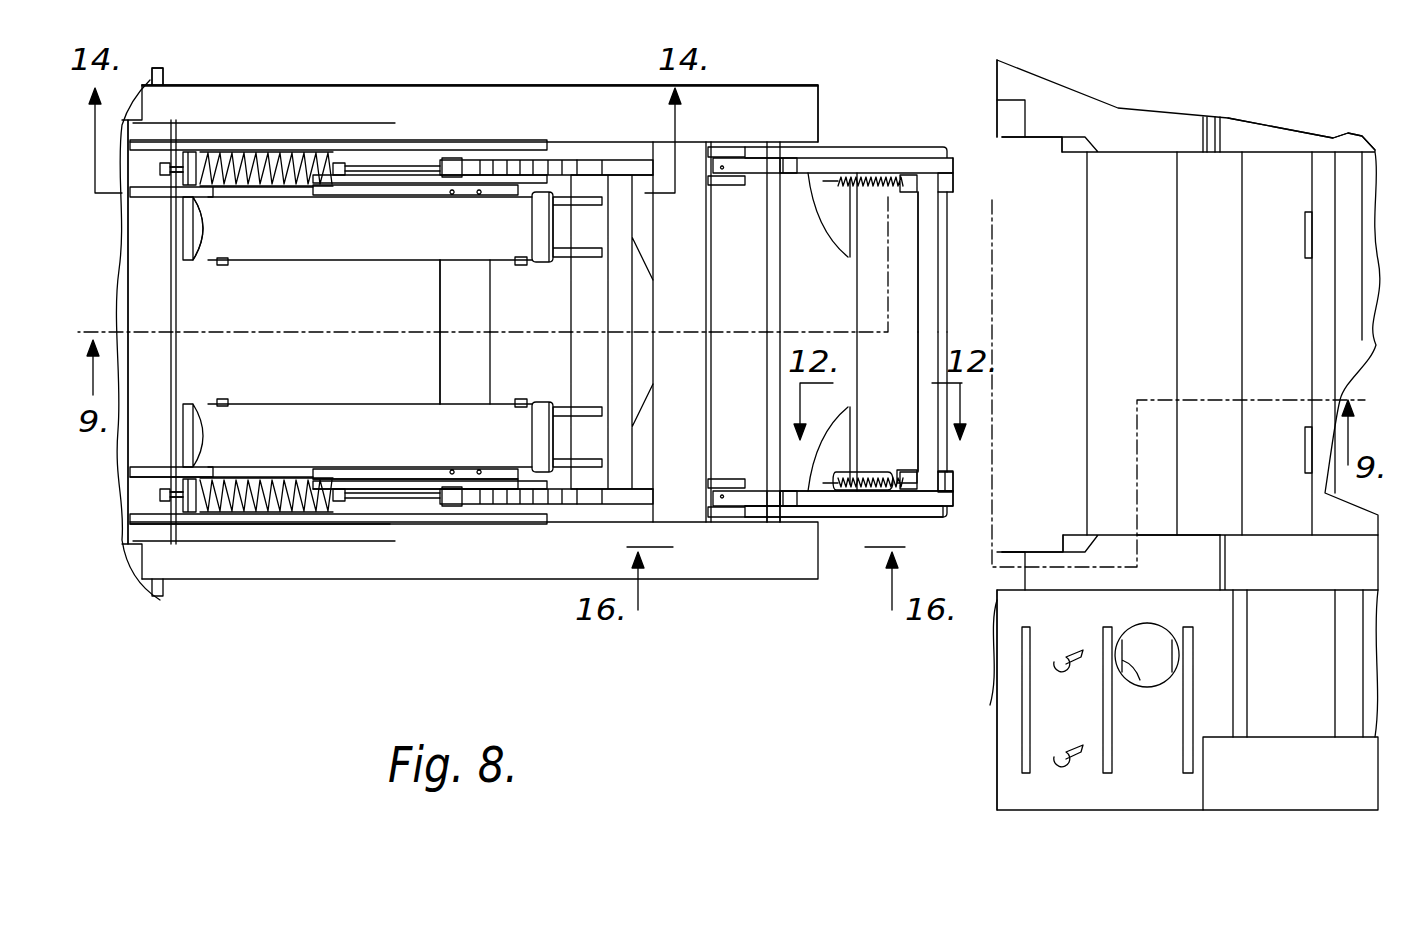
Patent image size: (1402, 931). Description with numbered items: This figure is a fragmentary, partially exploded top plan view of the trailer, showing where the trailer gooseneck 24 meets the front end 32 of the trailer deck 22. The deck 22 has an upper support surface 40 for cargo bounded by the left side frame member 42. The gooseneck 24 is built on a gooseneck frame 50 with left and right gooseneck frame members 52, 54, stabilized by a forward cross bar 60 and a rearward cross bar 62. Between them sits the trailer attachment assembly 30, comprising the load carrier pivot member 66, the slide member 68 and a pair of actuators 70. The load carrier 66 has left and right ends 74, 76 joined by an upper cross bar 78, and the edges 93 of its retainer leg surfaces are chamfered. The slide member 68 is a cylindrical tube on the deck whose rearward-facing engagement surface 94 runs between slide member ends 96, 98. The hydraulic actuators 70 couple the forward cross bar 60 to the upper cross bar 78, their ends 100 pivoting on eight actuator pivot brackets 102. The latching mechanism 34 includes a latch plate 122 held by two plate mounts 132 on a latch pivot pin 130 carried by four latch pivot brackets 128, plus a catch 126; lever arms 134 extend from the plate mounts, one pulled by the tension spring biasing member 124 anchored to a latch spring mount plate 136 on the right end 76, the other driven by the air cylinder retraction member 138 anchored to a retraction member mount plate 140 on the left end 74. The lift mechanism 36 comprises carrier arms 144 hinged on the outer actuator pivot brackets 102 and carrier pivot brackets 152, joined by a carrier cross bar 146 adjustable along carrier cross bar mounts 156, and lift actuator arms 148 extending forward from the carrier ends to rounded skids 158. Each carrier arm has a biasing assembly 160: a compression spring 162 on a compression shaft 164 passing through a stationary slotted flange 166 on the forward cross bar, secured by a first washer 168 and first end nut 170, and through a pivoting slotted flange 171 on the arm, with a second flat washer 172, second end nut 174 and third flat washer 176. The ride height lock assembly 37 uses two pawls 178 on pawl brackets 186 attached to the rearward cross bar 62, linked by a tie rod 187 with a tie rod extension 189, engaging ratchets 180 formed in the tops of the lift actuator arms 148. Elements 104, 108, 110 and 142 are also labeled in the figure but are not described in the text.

The trailer deck 22 is at (1372, 592).
The trailer gooseneck 24 is at (386, 50).
The trailer attachment assembly 30 is at (432, 322).
The front end 32 is at (998, 712).
The latching mechanism 34 is at (965, 162).
The lift mechanism 36 is at (362, 110).
The ride height lock assembly 37 is at (758, 140).
The upper support surface 40 is at (1290, 571).
The left side frame member 42 is at (1295, 795).
The gooseneck frame 50 is at (160, 80).
The left gooseneck frame member 52 is at (350, 570).
The right gooseneck frame member 54 is at (520, 100).
The forward cross bar 60 is at (150, 303).
The rearward cross bar 62 is at (722, 510).
The load carrier pivot member 66 is at (896, 145).
The slide member 68 is at (1217, 271).
The actuators 70 is at (368, 262).
The load carrier left end 74 is at (905, 492).
The load carrier right end 76 is at (836, 160).
The upper cross bar 78 is at (603, 299).
The edges of the retainer leg surfaces 93 is at (890, 515).
The slide member engagement surface 94 is at (1220, 318).
The left slide member end 96 is at (1200, 535).
The right slide member end 98 is at (1203, 150).
The actuator ends 100 is at (215, 237).
The actuator pivot brackets 102 is at (168, 197).
The notch 104 is at (1022, 120).
The side wall 108 is at (1000, 108).
The step 110 is at (1003, 142).
The latch plate 122 is at (930, 267).
The latch plate biasing member 124 is at (845, 248).
The catch 126 is at (1305, 230).
The latch pivot brackets 128 is at (955, 192).
The latch pivot pin 130 is at (940, 310).
The plate mounts 132 is at (950, 468).
The lever arms 134 is at (903, 470).
The latch spring mount plate 136 is at (840, 205).
The retraction member 138 is at (858, 478).
The retraction member mount plate 140 is at (835, 465).
The sloped panel 142 is at (1283, 160).
The carrier arms 144 is at (380, 167).
The carrier cross bar 146 is at (484, 299).
The lift actuator arms 148 is at (480, 166).
The carrier pivot brackets 152 is at (205, 145).
The carrier cross bar mounts 156 is at (407, 192).
The rounded skid 158 is at (452, 160).
The carrier arm biasing assembly 160 is at (235, 524).
The compression spring 162 is at (290, 485).
The compression shaft 164 is at (160, 172).
The stationary slotted flange 166 is at (182, 150).
The first washer 168 is at (172, 512).
The first end nut 170 is at (168, 160).
The pivoting slotted flange 171 is at (206, 205).
The second flat washer 172 is at (335, 187).
The second end nut 174 is at (345, 500).
The third flat washer 176 is at (222, 160).
The pawls 178 is at (757, 170).
The ratchets 180 is at (562, 152).
The pawl brackets 186 is at (705, 200).
The tie rod 187 is at (770, 277).
The tie rod extension 189 is at (775, 520).